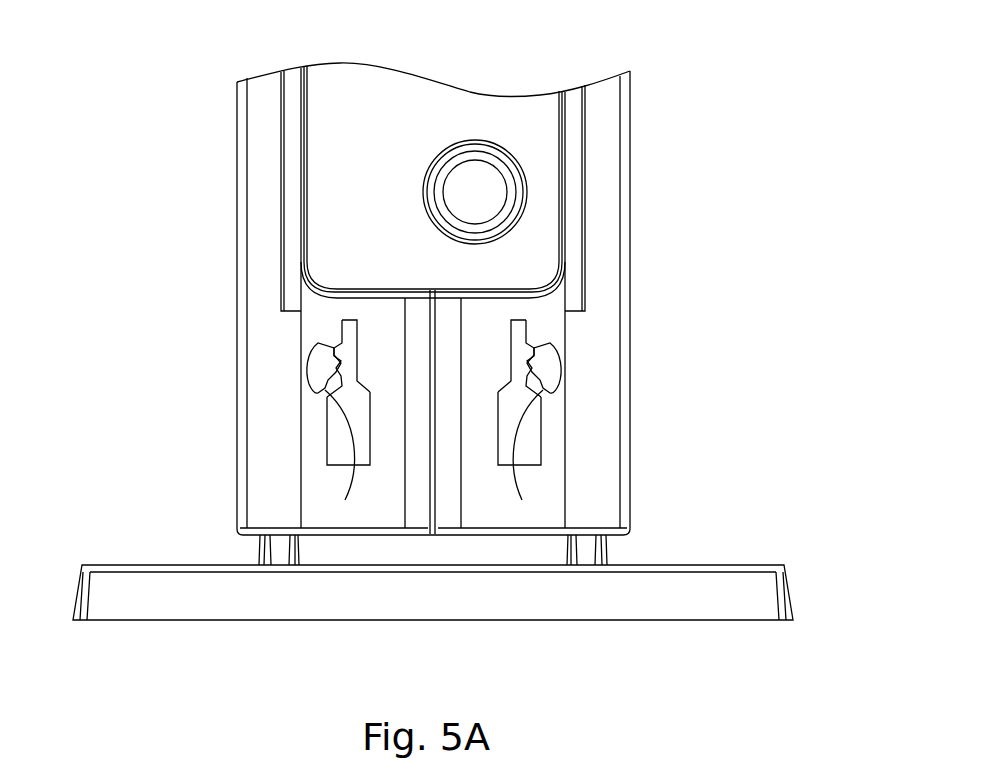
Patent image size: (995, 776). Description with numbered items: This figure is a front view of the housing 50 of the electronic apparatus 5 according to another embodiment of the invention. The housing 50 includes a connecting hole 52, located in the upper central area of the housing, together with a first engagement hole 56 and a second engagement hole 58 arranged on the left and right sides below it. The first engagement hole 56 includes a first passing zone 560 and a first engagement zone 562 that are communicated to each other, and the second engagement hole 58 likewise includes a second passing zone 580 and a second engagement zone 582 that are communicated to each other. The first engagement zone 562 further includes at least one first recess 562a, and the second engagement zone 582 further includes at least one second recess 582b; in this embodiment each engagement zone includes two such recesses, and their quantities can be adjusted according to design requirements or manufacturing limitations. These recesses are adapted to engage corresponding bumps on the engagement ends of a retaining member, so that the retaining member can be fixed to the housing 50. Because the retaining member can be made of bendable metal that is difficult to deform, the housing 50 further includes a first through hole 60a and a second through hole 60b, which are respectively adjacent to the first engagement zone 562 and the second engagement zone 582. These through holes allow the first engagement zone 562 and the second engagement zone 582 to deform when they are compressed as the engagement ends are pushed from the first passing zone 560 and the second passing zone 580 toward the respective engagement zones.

The electronic apparatus 5 is at (667, 71).
The housing 50 is at (631, 223).
The connecting hole 52 is at (527, 193).
The first engagement hole 56 is at (122, 272).
The first passing zone 560 is at (327, 433).
The first engagement zone 562 is at (342, 326).
The first recess 562a is at (318, 343).
The second engagement hole 58 is at (744, 272).
The second passing zone 580 is at (541, 433).
The second engagement zone 582 is at (526, 326).
The second recess 582b is at (550, 343).
The first through hole 60a is at (345, 500).
The second through hole 60b is at (522, 500).